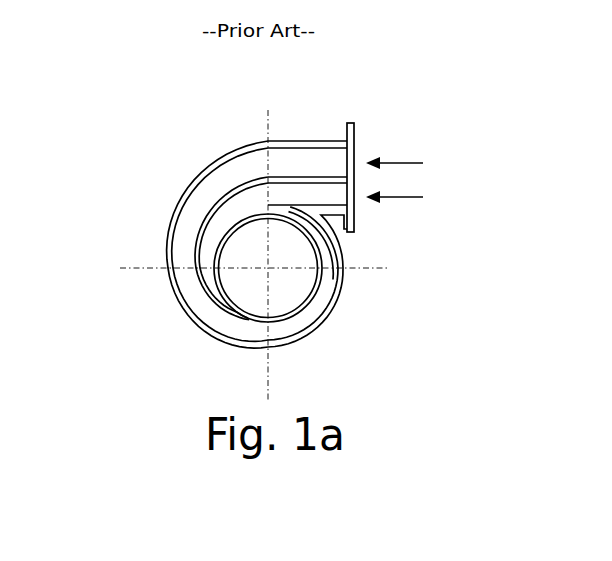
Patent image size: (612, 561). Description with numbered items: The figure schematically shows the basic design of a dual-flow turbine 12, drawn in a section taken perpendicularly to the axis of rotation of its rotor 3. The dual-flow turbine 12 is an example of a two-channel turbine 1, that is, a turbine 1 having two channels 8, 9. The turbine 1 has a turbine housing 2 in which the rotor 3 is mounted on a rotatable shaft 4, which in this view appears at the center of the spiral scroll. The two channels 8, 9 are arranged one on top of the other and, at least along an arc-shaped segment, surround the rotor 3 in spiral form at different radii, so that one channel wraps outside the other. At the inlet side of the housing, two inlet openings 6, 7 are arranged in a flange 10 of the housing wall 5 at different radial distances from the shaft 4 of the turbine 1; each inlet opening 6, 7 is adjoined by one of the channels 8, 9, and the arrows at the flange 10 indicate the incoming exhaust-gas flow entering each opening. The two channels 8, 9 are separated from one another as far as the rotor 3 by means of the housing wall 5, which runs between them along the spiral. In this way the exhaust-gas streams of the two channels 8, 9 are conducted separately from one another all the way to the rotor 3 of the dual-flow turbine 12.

The turbine 1 is at (200, 210).
The dual-flow turbine 12 is at (150, 153).
The turbine housing 2 is at (333, 225).
The rotor 3 is at (297, 295).
The shaft 4 is at (266, 272).
The housing wall 5 is at (193, 255).
The inlet opening 6 is at (355, 198).
The inlet opening 7 is at (354, 155).
The channel 8 is at (259, 200).
The channel 9 is at (232, 165).
The flange 10 is at (355, 135).